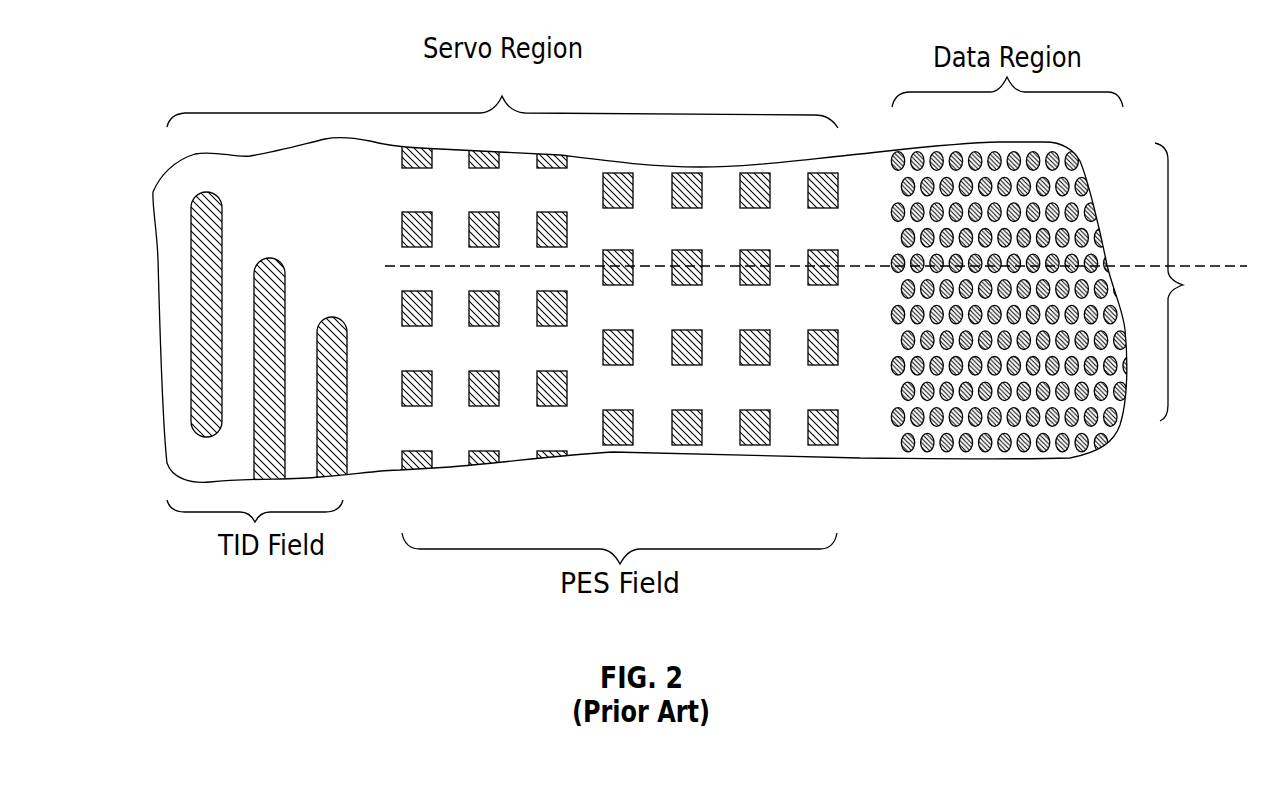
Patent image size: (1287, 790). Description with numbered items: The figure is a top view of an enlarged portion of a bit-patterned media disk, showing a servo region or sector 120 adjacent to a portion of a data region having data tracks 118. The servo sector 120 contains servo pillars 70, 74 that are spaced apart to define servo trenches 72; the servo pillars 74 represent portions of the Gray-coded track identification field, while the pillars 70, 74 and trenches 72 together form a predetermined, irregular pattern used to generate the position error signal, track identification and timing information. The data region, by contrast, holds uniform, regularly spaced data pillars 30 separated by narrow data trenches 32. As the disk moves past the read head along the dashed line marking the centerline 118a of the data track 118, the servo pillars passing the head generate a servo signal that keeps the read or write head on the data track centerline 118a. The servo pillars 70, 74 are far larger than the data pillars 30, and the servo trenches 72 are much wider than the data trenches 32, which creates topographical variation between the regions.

The data pillars 30 is at (1063, 184).
The data trenches 32 is at (940, 162).
The servo pillars 70 is at (753, 172).
The servo trenches 72 is at (312, 183).
The servo pillars 74 is at (197, 224).
The data track 118 is at (1194, 282).
The data track centerline 118a is at (1190, 267).
The servo region 120 is at (502, 94).